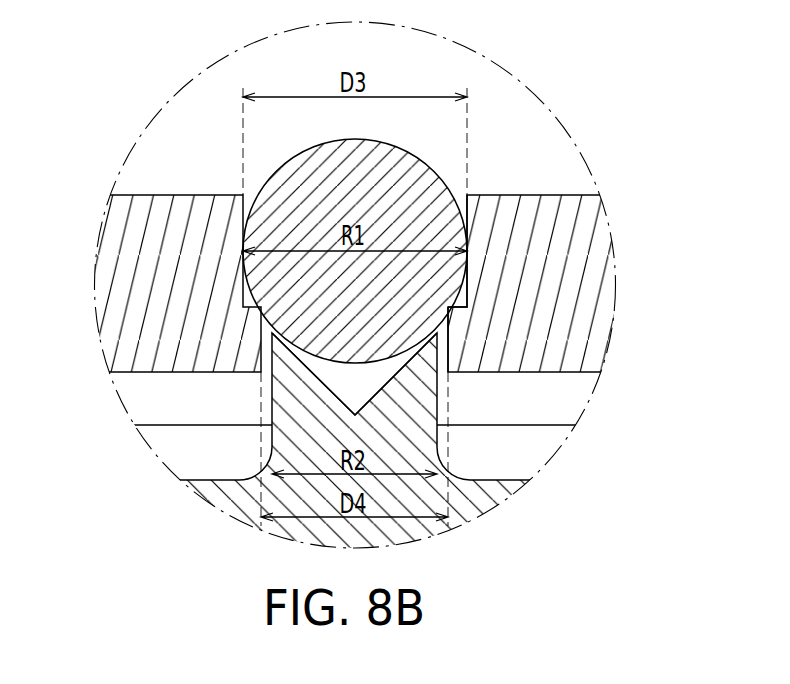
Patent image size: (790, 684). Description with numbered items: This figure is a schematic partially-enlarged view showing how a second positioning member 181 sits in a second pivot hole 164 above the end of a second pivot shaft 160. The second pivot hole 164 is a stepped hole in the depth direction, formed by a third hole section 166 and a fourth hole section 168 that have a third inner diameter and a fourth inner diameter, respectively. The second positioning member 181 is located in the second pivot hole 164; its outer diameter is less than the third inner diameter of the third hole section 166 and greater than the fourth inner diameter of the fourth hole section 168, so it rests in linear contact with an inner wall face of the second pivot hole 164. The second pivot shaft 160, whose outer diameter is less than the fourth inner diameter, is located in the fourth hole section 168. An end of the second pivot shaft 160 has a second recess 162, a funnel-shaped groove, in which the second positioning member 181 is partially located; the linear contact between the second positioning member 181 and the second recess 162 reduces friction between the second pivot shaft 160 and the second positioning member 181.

The second pivot shaft 160 is at (406, 385).
The second recess 162 is at (345, 386).
The second pivot hole 164 is at (686, 260).
The third hole section 166 is at (464, 296).
The fourth hole section 168 is at (443, 329).
The second positioning member 181 is at (303, 188).